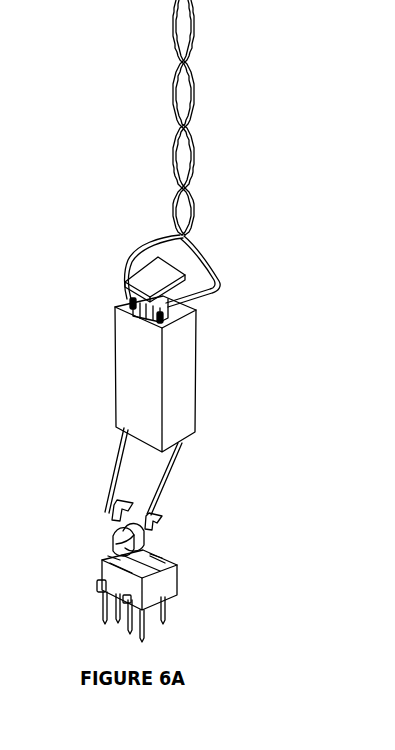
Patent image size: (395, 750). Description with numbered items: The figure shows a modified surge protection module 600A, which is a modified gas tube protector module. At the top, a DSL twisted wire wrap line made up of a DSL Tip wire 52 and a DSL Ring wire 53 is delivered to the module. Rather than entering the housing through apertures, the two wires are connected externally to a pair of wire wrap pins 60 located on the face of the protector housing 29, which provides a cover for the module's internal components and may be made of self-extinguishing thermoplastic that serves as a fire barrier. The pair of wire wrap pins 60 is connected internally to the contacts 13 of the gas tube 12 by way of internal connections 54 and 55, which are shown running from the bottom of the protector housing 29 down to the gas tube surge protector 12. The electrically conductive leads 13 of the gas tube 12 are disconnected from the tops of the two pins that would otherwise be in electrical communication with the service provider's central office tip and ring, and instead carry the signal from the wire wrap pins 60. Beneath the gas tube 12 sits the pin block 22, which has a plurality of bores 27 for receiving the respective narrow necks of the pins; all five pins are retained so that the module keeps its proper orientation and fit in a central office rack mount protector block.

The modified surge protection module 600A is at (228, 148).
The DSL Ring wire 53 is at (132, 248).
The DSL Tip wire 52 is at (216, 276).
The wire wrap pins 60 is at (128, 300).
The protector housing 29 is at (113, 368).
The internal connection 55 is at (107, 513).
The internal connection 54 is at (158, 494).
The electrically conductive leads 13 is at (115, 557).
The gas tube surge protector 12 is at (118, 540).
The pin block 22 is at (163, 558).
The bores 27 is at (165, 602).